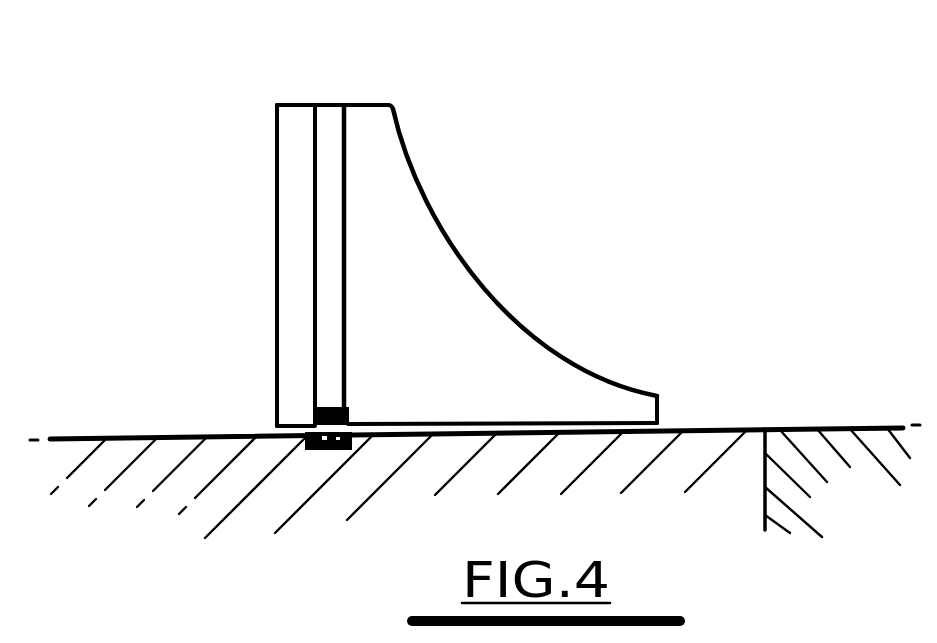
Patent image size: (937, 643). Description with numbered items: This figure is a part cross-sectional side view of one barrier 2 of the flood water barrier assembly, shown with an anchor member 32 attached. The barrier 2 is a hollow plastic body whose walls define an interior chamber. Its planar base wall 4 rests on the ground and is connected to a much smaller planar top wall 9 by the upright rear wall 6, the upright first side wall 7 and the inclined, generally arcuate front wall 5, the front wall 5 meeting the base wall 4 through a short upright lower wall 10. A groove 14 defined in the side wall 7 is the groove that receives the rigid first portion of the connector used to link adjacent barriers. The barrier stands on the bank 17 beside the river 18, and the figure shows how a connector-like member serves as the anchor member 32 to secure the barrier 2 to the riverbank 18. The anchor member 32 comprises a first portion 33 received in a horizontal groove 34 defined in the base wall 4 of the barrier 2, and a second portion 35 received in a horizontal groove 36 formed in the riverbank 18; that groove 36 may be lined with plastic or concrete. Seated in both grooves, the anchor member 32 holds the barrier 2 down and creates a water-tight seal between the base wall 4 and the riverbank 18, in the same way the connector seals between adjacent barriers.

The first barrier 2 is at (470, 310).
The base wall 4 is at (520, 421).
The front wall 5 is at (508, 306).
The rear wall 6 is at (273, 143).
The first side wall 7 is at (388, 178).
The top wall 9 is at (372, 103).
The lower wall 10 is at (661, 410).
The groove 14 is at (337, 223).
The bank 17 is at (745, 543).
The river 18 is at (890, 537).
The anchor member 32 is at (350, 408).
The first portion 33 is at (313, 412).
The horizontal groove 34 is at (343, 410).
The second portion 35 is at (330, 452).
The horizontal groove 36 is at (347, 446).